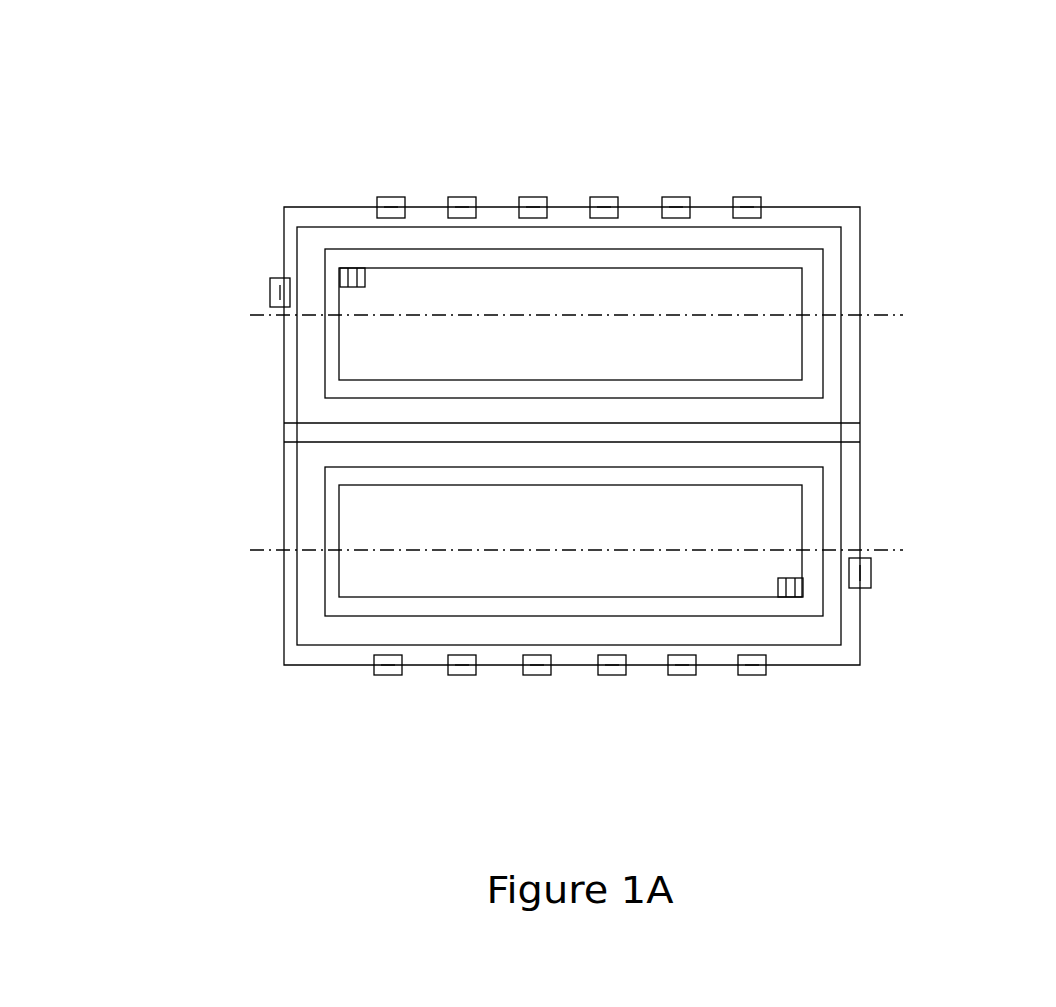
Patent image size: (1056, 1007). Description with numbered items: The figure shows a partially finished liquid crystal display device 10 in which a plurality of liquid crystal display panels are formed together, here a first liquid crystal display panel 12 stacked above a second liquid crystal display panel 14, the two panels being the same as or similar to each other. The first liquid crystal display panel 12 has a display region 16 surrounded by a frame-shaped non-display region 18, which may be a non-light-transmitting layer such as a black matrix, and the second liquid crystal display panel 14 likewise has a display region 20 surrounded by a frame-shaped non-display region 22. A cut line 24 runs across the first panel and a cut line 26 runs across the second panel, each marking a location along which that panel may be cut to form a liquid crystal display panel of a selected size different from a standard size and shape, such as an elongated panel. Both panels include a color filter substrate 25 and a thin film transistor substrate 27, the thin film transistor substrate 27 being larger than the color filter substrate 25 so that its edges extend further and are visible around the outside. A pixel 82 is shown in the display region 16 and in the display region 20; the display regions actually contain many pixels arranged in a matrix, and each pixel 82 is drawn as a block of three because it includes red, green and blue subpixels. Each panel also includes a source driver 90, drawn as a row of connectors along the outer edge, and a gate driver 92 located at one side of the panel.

The liquid crystal display device 10 is at (909, 72).
The first liquid crystal display panel 12 is at (873, 259).
The second liquid crystal display panel 14 is at (873, 494).
The display region 16 is at (363, 343).
The non-display region 18 is at (335, 390).
The display region 20 is at (373, 578).
The non-display region 22 is at (337, 606).
The cut line 24 is at (898, 317).
The color filter (CF) substrate 25 is at (308, 255).
The cut line 26 is at (895, 552).
The thin film transistor (TFT) substrate 27 is at (298, 217).
The pixel 82 is at (352, 256).
The source driver 90 is at (758, 192).
The gate driver 92 is at (270, 290).